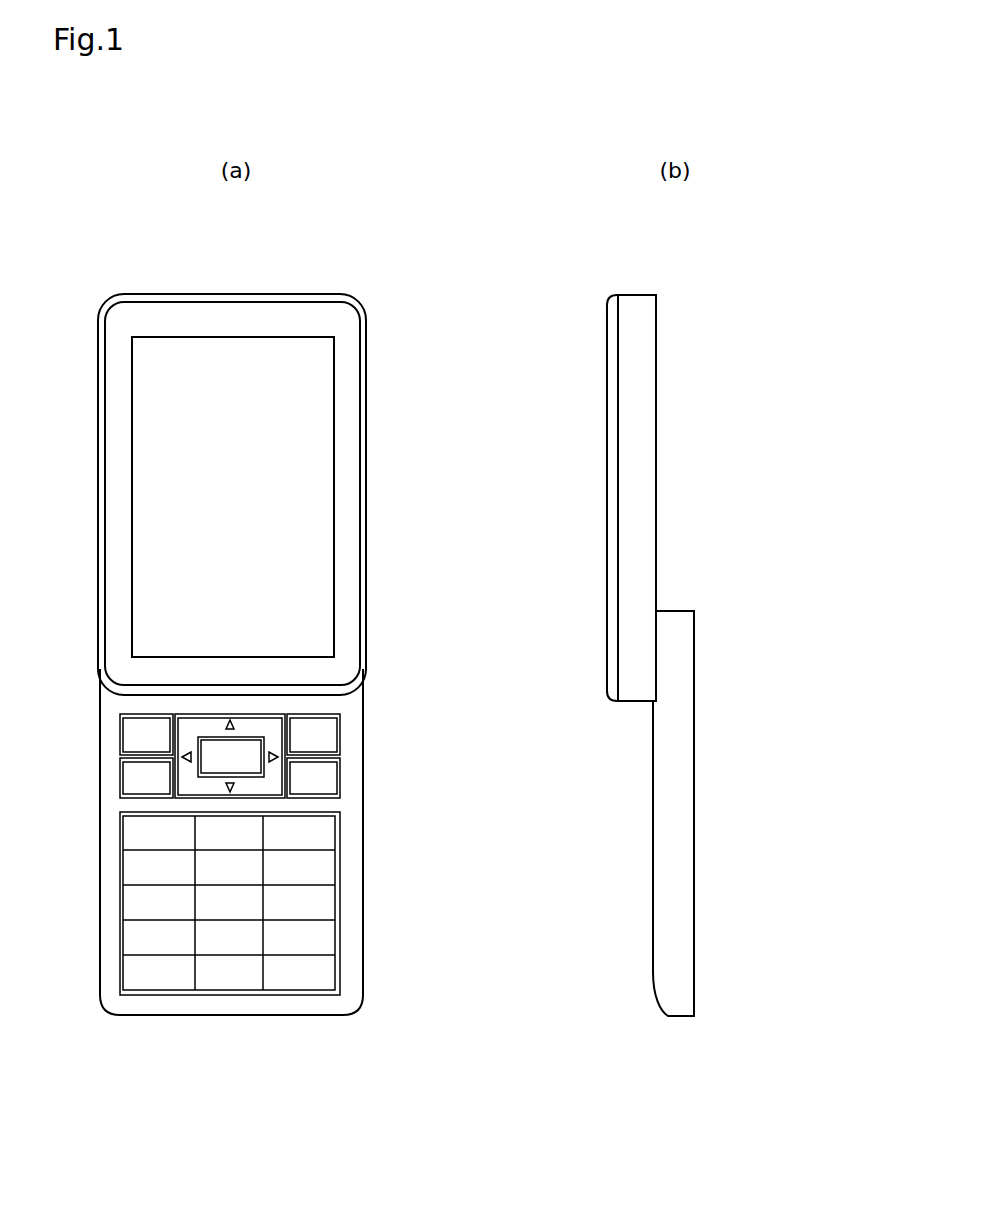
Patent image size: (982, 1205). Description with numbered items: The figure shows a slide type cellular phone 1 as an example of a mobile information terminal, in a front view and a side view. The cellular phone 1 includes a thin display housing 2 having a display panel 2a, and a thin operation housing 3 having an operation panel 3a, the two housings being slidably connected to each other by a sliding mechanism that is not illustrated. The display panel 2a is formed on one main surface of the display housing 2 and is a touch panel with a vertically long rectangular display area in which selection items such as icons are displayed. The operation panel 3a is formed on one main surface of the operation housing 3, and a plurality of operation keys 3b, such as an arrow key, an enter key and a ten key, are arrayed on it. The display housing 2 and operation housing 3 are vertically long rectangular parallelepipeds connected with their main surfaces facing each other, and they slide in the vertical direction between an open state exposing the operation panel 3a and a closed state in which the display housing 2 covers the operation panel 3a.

The cellular phone 1 is at (410, 251).
The display housing 2 is at (368, 393).
The display panel 2a is at (334, 475).
The operation housing 3 is at (363, 805).
The operation panel 3a is at (333, 712).
The operation keys 3b is at (329, 746).